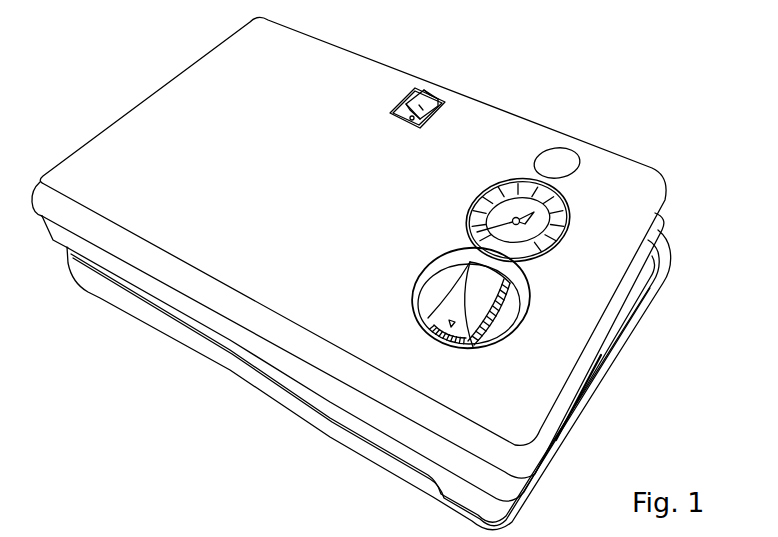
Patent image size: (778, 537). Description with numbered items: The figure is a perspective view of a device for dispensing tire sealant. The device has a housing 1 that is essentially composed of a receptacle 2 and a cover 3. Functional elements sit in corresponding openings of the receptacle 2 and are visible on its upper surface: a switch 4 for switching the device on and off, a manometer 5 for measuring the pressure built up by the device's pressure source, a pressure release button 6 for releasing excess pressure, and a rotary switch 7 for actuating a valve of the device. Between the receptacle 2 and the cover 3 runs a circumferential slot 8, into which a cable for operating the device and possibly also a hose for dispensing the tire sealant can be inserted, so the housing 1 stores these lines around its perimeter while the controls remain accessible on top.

The housing 1 is at (368, 273).
The receptacle 2 is at (368, 247).
The cover 3 is at (385, 380).
The switch 4 is at (428, 93).
The manometer 5 is at (532, 200).
The pressure release button 6 is at (560, 160).
The rotary switch 7 is at (472, 313).
The circumferential slot 8 is at (228, 345).